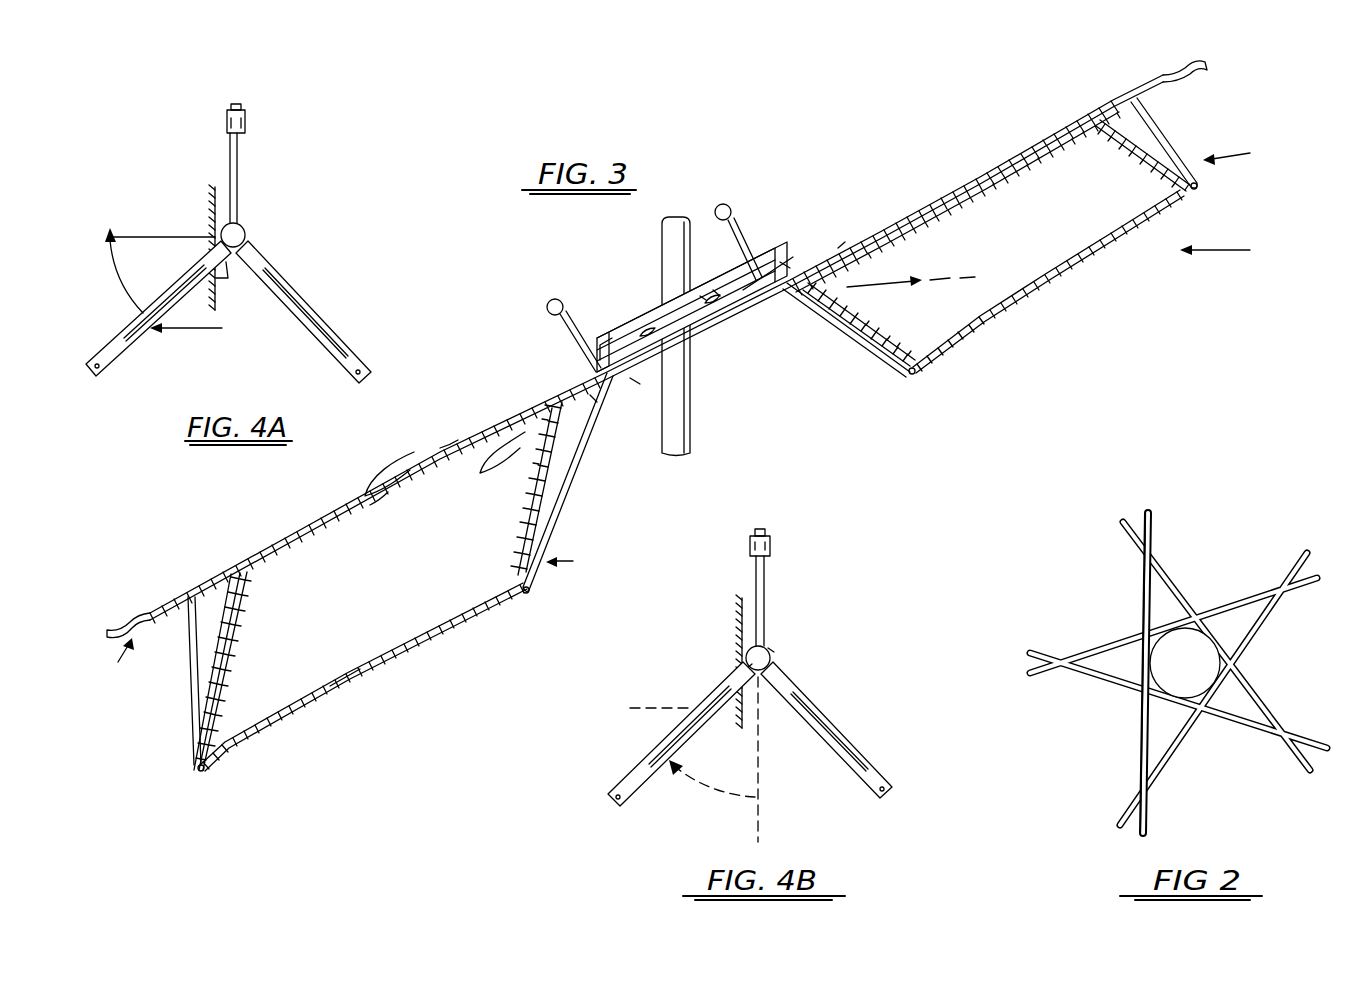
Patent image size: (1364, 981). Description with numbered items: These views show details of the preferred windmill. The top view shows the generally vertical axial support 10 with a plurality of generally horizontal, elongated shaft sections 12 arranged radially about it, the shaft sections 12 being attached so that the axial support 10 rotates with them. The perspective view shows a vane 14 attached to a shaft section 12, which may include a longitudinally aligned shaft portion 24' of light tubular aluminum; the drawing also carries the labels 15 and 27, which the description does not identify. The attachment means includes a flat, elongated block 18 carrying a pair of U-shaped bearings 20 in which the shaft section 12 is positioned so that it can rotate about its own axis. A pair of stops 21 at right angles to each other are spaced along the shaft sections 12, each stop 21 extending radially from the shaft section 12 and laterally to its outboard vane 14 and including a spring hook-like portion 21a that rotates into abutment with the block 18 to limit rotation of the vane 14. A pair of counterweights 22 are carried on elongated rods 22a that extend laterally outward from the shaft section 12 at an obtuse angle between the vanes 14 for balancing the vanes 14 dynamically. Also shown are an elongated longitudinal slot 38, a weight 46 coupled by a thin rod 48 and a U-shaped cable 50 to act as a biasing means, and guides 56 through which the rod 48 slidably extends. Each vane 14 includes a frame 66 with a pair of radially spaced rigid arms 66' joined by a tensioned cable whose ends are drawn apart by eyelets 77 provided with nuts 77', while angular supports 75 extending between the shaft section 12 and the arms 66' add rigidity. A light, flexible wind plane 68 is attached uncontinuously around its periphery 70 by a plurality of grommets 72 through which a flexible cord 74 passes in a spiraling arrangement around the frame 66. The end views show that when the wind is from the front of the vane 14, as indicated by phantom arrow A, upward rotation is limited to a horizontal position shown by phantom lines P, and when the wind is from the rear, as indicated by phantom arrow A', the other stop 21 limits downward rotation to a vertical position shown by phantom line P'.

In FIG. 2, the axial support 10 is at (1185, 663).
In FIG. 3, the axial support 10 is at (660, 245).
In FIG. 4A, the shaft section 12 is at (246, 231).
In FIG. 4B, the shaft section 12 is at (771, 656).
In FIG. 2, the shaft section 12 is at (1146, 586).
In FIG. 3, the shaft section 12 is at (838, 246).
In FIG. 3, the vane 14 is at (1278, 259).
In FIG. 3, the end post 15 is at (176, 681).
In FIG. 4A, the block 18 is at (219, 294).
In FIG. 4B, the block 18 is at (739, 628).
In FIG. 3, the block 18 is at (648, 306).
In FIG. 3, the U-shaped bearing 20 is at (630, 336).
In FIG. 4A, the stop 21 is at (254, 255).
In FIG. 4B, the stop 21 is at (770, 648).
In FIG. 3, the stop 21 is at (713, 290).
In FIG. 4A, the spring hook-like portion 21a is at (280, 320).
In FIG. 4B, the spring hook-like portion 21a is at (772, 640).
In FIG. 3, the spring hook-like portion 21a is at (707, 348).
In FIG. 4B, the counterweight 22 is at (771, 546).
In FIG. 3, the counterweight 22 is at (548, 302).
In FIG. 4A, the elongated rod 22a is at (274, 175).
In FIG. 4B, the elongated rod 22a is at (766, 586).
In FIG. 3, the elongated rod 22a is at (570, 344).
In FIG. 3, the shaft portion 24' is at (707, 309).
In FIG. 3, the hook end 27 is at (1222, 78).
In FIG. 3, the longitudinal slot 38 is at (702, 306).
In FIG. 3, the weight 46 is at (378, 510).
In FIG. 3, the thin rod 48 is at (458, 450).
In FIG. 3, the U-shaped cable 50 is at (634, 386).
In FIG. 3, the guide 56 is at (410, 448).
In FIG. 3, the frame 66 is at (911, 355).
In FIG. 4A, the rigid arm 66' is at (158, 313).
In FIG. 4B, the rigid arm 66' is at (675, 734).
In FIG. 3, the rigid arm 66' is at (670, 409).
In FIG. 3, the wind plane 68 is at (681, 415).
In FIG. 3, the periphery 70 is at (274, 728).
In FIG. 4A, the grommet 72 is at (248, 116).
In FIG. 3, the grommet 72 is at (244, 637).
In FIG. 3, the flexible cord 74 is at (348, 677).
In FIG. 3, the angular support 75 is at (584, 447).
In FIG. 3, the eyelet 77 is at (679, 490).
In FIG. 3, the nut 77' is at (730, 482).
In FIG. 4A, the phantom lines P is at (160, 260).
In FIG. 4A, the phantom arrow A is at (195, 328).
In FIG. 4B, the phantom line P' is at (713, 759).
In FIG. 4B, the phantom arrow A' is at (648, 699).